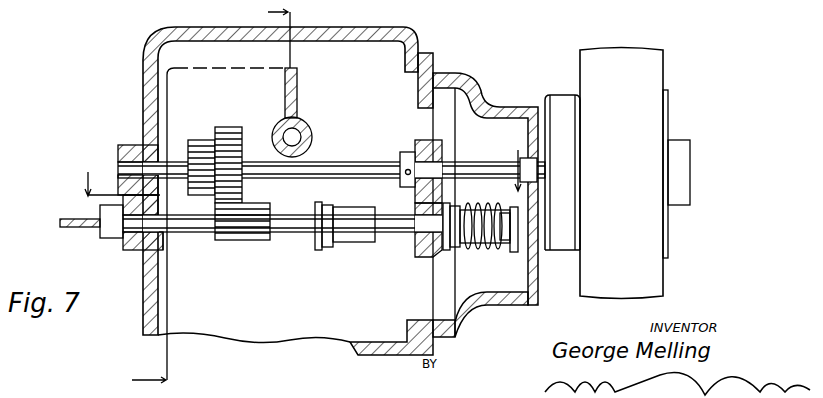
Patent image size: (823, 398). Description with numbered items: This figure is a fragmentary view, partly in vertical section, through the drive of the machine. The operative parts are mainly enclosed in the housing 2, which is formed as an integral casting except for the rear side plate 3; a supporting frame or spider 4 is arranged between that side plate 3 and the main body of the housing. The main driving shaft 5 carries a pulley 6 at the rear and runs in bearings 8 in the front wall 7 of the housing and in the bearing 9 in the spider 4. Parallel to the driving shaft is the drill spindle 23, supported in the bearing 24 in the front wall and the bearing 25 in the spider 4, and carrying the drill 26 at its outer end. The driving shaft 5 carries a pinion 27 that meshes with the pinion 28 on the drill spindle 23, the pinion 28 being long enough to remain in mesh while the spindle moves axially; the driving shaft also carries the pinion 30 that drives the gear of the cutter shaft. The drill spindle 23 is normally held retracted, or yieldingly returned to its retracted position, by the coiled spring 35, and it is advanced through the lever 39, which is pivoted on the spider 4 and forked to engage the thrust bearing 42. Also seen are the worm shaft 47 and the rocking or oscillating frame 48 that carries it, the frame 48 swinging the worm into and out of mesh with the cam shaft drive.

The housing 2 is at (415, 20).
The rear side plate 3 is at (478, 95).
The supporting frame or spider 4 is at (433, 70).
The main driving shaft 5 is at (356, 165).
The pulley 6 is at (634, 62).
The front wall 7 is at (143, 114).
The bearings 8 is at (138, 145).
The bearing 9 is at (416, 148).
The drill spindle 23 is at (200, 232).
The bearing 24 is at (163, 248).
The bearing 25 is at (418, 250).
The drill 26 is at (72, 228).
The pinion 27 is at (232, 127).
The pinion 28 is at (256, 240).
The pinion 30 is at (202, 140).
The coiled springs 35 is at (482, 250).
The lever 39 is at (362, 242).
The thrust bearing 42 is at (322, 250).
The worm shaft 47 is at (311, 133).
The rocking or oscillating frame 48 is at (297, 86).